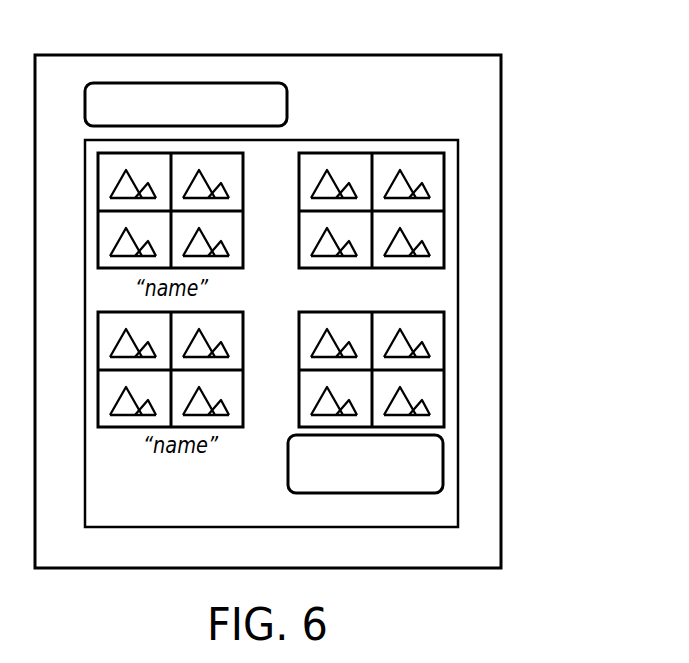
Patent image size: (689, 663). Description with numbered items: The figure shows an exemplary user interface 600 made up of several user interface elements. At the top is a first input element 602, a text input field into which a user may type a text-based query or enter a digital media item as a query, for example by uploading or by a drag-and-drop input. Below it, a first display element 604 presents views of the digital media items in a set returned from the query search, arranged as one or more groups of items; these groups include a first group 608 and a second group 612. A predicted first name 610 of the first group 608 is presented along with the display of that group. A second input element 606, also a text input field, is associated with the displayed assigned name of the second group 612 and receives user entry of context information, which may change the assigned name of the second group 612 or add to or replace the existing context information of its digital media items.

The user interface 600 is at (502, 83).
The first input element 602 is at (180, 83).
The first display element 604 is at (462, 172).
The second input element 606 is at (443, 472).
The first group 608 is at (440, 222).
The predicted first name 610 is at (413, 280).
The second group 612 is at (440, 382).